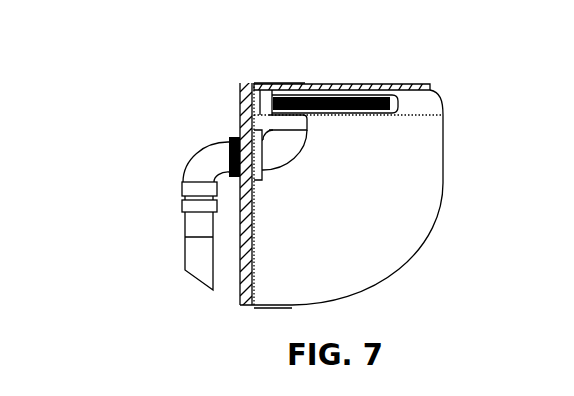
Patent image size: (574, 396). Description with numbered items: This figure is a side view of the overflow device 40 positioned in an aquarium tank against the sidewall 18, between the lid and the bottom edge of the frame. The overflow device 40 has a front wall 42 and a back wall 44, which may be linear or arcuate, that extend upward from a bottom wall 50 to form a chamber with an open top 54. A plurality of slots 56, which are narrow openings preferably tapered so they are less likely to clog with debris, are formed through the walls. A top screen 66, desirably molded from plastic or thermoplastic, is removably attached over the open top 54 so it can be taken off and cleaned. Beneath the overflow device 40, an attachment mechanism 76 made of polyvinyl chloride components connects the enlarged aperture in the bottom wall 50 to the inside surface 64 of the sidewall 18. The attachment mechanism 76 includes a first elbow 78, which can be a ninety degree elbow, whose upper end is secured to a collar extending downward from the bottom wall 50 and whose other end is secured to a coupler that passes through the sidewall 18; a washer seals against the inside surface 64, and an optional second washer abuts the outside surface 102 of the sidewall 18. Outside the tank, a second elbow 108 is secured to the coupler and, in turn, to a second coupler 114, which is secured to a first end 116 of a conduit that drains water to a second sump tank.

The sidewall 18 is at (262, 253).
The overflow device 40 is at (420, 63).
The front wall 42 is at (407, 115).
The back wall 44 is at (268, 95).
The bottom wall 50 is at (370, 117).
The open top 54 is at (375, 85).
The slots 56 is at (338, 98).
The inside surface 64 is at (255, 219).
The top screen 66 is at (303, 75).
The attachment mechanism 76 is at (312, 154).
The first elbow 78 is at (287, 165).
The outside surface 102 is at (243, 265).
The second elbow 108 is at (189, 138).
The second coupler 114 is at (182, 200).
The first end 116 is at (185, 253).